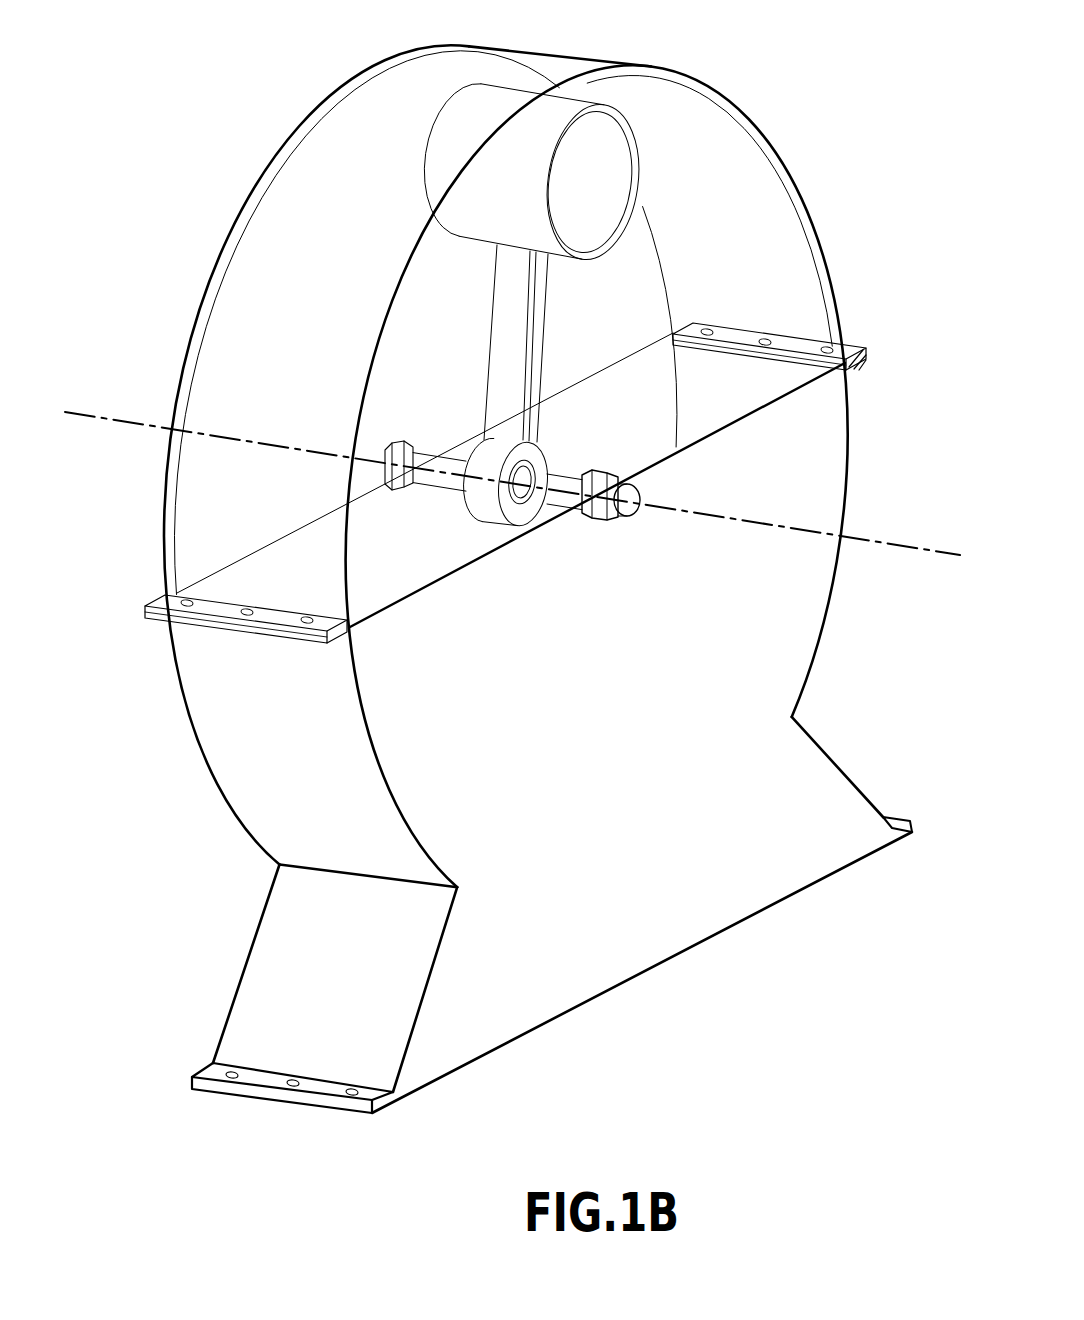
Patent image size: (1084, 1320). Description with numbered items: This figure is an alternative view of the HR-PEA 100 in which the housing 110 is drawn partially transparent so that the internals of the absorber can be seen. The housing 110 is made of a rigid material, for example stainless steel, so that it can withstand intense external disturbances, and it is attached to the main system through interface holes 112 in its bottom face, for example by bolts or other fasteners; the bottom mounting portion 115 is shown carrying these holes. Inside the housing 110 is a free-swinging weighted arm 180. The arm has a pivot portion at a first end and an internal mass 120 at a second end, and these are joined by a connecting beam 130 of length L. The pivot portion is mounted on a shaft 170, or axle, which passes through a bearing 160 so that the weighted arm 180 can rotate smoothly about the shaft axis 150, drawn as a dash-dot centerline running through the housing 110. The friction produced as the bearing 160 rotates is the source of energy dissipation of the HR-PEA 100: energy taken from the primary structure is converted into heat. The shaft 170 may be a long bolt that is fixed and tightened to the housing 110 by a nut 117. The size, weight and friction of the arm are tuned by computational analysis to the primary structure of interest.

The HR-PEA 100 is at (143, 37).
The housing 110 is at (348, 135).
The interface holes 112 is at (350, 1094).
The base 115 is at (698, 952).
The nut 117 is at (630, 527).
The internal mass 120 is at (623, 148).
The connecting beam 130 is at (540, 322).
The shaft axis 150 is at (132, 422).
The bearing 160 is at (530, 460).
The shaft 170 is at (450, 480).
The weighted arm 180 is at (483, 330).